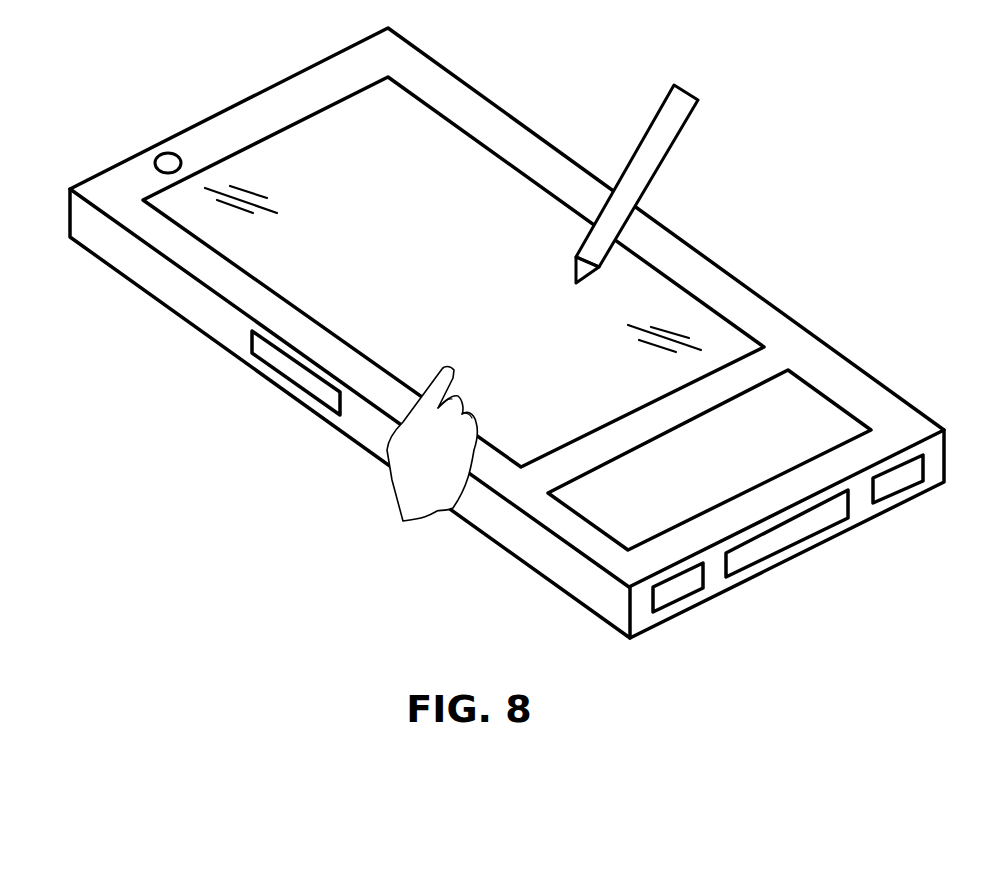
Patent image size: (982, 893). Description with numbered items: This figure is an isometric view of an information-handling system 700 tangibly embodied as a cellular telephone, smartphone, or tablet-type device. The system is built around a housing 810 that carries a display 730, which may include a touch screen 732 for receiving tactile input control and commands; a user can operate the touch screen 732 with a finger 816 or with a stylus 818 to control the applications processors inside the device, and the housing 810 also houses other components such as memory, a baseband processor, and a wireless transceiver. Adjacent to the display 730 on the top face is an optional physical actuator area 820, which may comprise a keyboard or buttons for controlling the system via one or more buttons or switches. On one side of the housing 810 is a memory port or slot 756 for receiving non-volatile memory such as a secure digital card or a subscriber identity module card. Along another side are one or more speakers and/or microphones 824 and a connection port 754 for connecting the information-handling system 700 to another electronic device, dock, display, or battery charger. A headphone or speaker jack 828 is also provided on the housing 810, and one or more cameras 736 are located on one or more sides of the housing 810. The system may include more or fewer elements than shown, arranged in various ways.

The information-handling system 700 is at (521, 66).
The display 730 is at (362, 141).
The touch screen 732 is at (482, 270).
The camera 736 is at (158, 153).
The connection port 754 is at (806, 538).
The memory port or slot 756 is at (267, 365).
The housing 810 is at (325, 57).
The finger 816 is at (447, 368).
The stylus 818 is at (654, 118).
The physical actuator area 820 is at (813, 418).
The speakers and/or microphones 824 is at (904, 492).
The headphone or speaker jack 828 is at (97, 172).